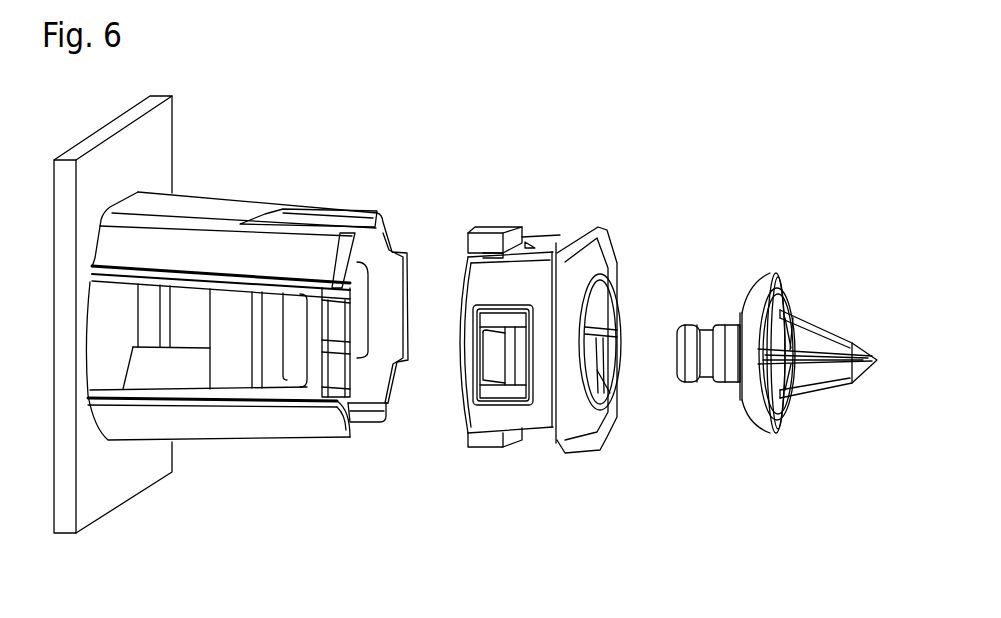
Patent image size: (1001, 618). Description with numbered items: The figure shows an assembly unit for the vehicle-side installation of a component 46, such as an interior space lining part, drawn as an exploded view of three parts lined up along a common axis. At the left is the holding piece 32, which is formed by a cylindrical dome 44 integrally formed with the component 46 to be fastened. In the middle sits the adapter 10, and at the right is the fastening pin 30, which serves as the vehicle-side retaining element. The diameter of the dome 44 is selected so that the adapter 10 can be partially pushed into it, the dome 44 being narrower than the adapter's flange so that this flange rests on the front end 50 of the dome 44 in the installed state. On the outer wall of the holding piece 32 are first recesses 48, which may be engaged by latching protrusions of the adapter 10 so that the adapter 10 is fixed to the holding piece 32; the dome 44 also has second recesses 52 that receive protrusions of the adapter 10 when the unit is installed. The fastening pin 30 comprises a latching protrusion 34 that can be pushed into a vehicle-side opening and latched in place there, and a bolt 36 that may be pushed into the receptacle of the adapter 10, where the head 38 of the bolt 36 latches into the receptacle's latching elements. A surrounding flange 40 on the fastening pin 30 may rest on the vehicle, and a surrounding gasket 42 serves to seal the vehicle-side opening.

The adapter 10 is at (555, 213).
The fastening pin 30 is at (777, 323).
The holding piece 32 is at (259, 304).
The latching protrusion 34 is at (833, 322).
The bolt 36 is at (723, 340).
The head 38 is at (690, 372).
The surrounding flange 40 is at (758, 290).
The surrounding gasket 42 is at (778, 431).
The cylindrical dome 44 is at (231, 321).
The component 46 is at (155, 130).
The first recesses 48 is at (293, 378).
The front end 50 is at (392, 226).
The second recesses 52 is at (366, 168).